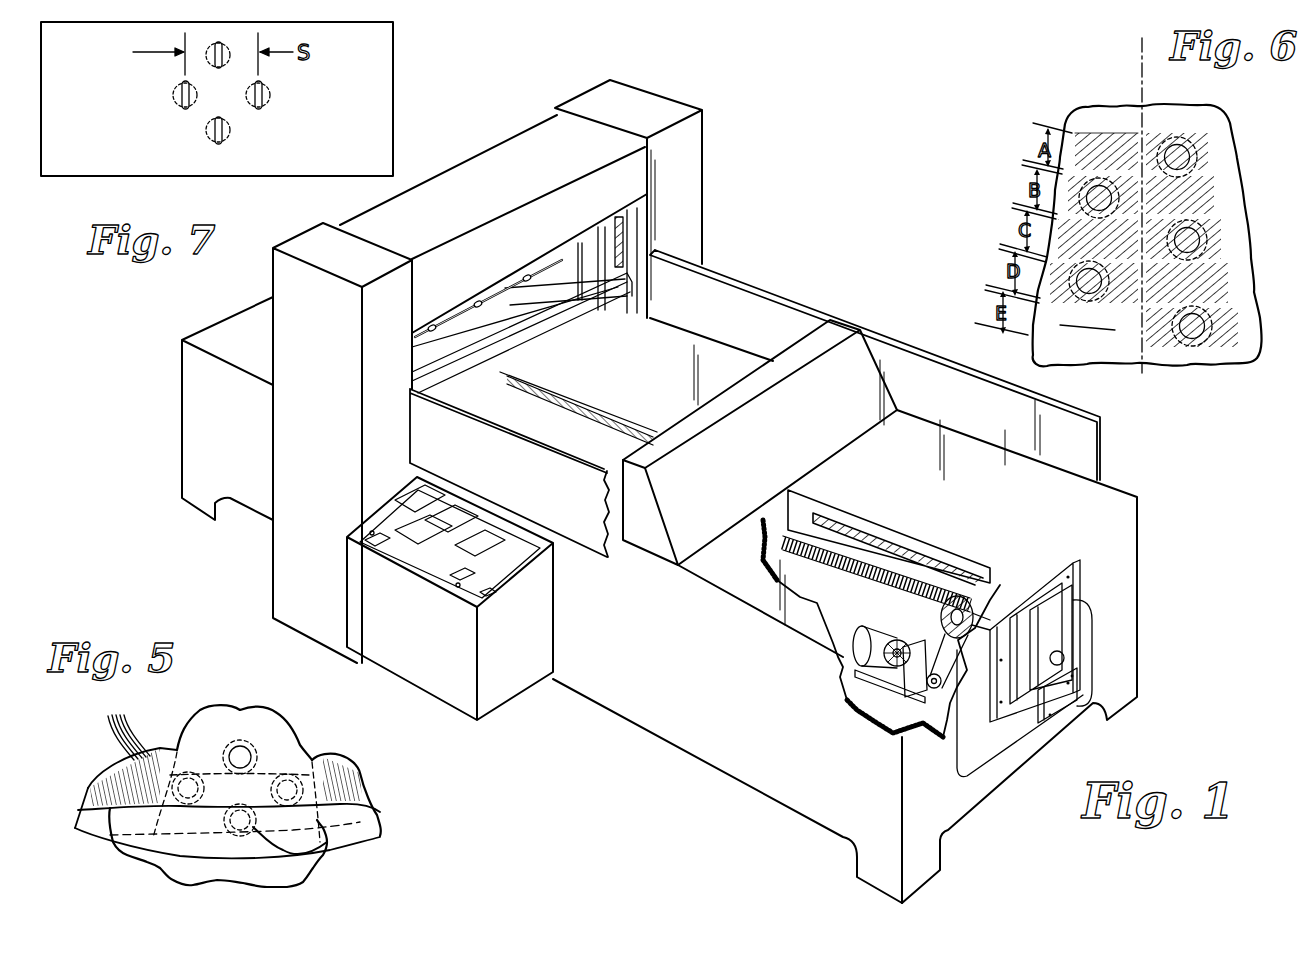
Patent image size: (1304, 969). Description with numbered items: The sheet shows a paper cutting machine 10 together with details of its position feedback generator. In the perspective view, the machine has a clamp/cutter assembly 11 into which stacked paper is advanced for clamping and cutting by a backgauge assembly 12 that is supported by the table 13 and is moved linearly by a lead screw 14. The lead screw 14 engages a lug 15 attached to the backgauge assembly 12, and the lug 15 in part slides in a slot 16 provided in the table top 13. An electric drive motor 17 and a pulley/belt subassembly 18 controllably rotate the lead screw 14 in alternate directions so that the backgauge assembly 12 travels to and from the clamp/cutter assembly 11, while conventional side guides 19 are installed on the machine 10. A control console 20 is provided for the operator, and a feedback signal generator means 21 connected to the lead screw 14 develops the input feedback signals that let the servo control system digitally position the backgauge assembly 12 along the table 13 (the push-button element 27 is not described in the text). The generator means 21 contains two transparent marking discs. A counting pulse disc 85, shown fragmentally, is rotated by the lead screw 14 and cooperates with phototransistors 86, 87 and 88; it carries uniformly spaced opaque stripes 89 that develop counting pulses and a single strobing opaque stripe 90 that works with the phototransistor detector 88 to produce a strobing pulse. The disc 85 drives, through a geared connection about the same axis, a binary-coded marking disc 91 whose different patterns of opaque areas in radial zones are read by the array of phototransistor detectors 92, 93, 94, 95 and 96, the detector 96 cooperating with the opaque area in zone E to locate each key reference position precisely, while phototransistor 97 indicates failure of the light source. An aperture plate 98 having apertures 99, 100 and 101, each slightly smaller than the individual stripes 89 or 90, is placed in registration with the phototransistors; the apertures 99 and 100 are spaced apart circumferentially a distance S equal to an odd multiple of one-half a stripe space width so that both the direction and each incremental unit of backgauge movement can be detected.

In FIG. 1, the paper cutting machine 10 is at (726, 240).
In FIG. 1, the clamp/cutter assembly 11 is at (562, 307).
In FIG. 1, the backgauge assembly 12 is at (852, 365).
In FIG. 1, the table 13 is at (657, 377).
In FIG. 1, the lead screw 14 is at (863, 570).
In FIG. 1, the lug 15 is at (796, 518).
In FIG. 1, the slot 16 is at (958, 570).
In FIG. 1, the electric drive motor 17 is at (848, 703).
In FIG. 1, the pulley/belt subassembly 18 is at (950, 705).
In FIG. 1, the side guides 19 is at (770, 316).
In FIG. 1, the control console 20 is at (540, 612).
In FIG. 1, the feedback signal generator means 21 is at (1075, 633).
In FIG. 1, the push button 27 is at (486, 600).
In FIG. 5, the counting pulse disc 85 is at (328, 755).
In FIG. 5, the phototransistor 86 is at (188, 768).
In FIG. 5, the phototransistor 87 is at (378, 817).
In FIG. 5, the phototransistor detector 88 is at (313, 853).
In FIG. 5, the opaque stripes 89 is at (120, 729).
In FIG. 5, the strobing opaque stripe 90 is at (115, 848).
In FIG. 6, the binary-coded marking disc 91 is at (1088, 332).
In FIG. 6, the phototransistor detector 92 is at (1200, 155).
In FIG. 6, the phototransistor detector 93 is at (1098, 134).
In FIG. 6, the phototransistor detector 94 is at (1207, 248).
In FIG. 6, the phototransistor detector 95 is at (1046, 340).
In FIG. 6, the phototransistor 96 is at (1213, 325).
In FIG. 5, the phototransistor 97 is at (260, 740).
In FIG. 7, the aperture plate 98 is at (122, 168).
In FIG. 7, the aperture 99 is at (181, 95).
In FIG. 7, the aperture 100 is at (263, 98).
In FIG. 7, the aperture 101 is at (222, 132).